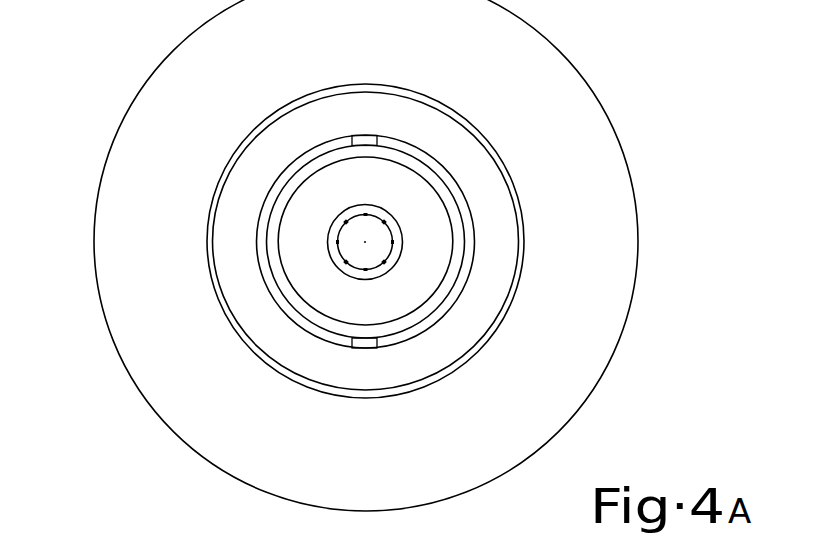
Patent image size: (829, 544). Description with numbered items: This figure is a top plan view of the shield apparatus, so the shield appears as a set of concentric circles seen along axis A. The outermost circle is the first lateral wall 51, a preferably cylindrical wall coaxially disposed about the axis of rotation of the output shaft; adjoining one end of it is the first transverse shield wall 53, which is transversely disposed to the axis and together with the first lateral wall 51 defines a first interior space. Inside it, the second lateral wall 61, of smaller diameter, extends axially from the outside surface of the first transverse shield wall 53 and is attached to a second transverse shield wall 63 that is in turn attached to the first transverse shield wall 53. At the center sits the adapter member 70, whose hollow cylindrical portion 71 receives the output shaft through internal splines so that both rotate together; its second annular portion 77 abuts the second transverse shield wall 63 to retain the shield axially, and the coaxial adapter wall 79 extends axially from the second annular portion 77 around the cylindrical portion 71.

The first lateral wall 51 is at (98, 190).
The first transverse shield wall 53 is at (201, 394).
The second lateral wall 61 is at (258, 128).
The second transverse shield wall 63 is at (266, 326).
The adapter member 70 is at (474, 333).
The hollow cylindrical portion 71 is at (402, 248).
The second annular portion 77 is at (318, 262).
The coaxial adapter wall 79 is at (267, 262).